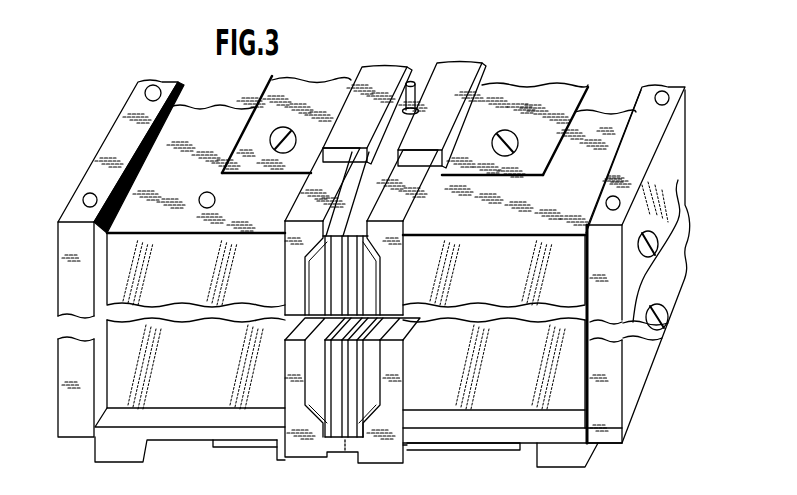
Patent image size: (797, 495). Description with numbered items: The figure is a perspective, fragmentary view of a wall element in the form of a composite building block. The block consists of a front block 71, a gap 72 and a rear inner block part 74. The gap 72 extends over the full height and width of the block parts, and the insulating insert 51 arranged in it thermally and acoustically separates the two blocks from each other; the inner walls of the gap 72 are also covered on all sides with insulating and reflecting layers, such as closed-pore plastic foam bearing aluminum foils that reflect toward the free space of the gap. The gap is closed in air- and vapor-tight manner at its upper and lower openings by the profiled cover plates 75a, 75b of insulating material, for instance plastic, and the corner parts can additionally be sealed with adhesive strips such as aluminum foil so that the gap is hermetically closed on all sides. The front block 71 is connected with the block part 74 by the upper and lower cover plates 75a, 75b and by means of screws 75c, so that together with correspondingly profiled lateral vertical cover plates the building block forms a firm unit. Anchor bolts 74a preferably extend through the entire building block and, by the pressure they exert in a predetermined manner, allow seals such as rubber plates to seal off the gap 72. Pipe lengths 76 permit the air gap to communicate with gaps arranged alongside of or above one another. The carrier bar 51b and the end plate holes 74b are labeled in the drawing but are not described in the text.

The insulating insert 51 is at (330, 287).
The contact carrier bars 51b is at (382, 208).
The front block 71 is at (162, 162).
The gap 72 is at (313, 277).
The block part 74 is at (586, 191).
The anchor bolts 74a is at (667, 323).
The end plates with mounting holes 74b is at (88, 197).
The upper cover plate 75a is at (540, 98).
The lower cover plate 75b is at (293, 463).
The screws 75c is at (516, 137).
The pipe lengths 76 is at (420, 90).